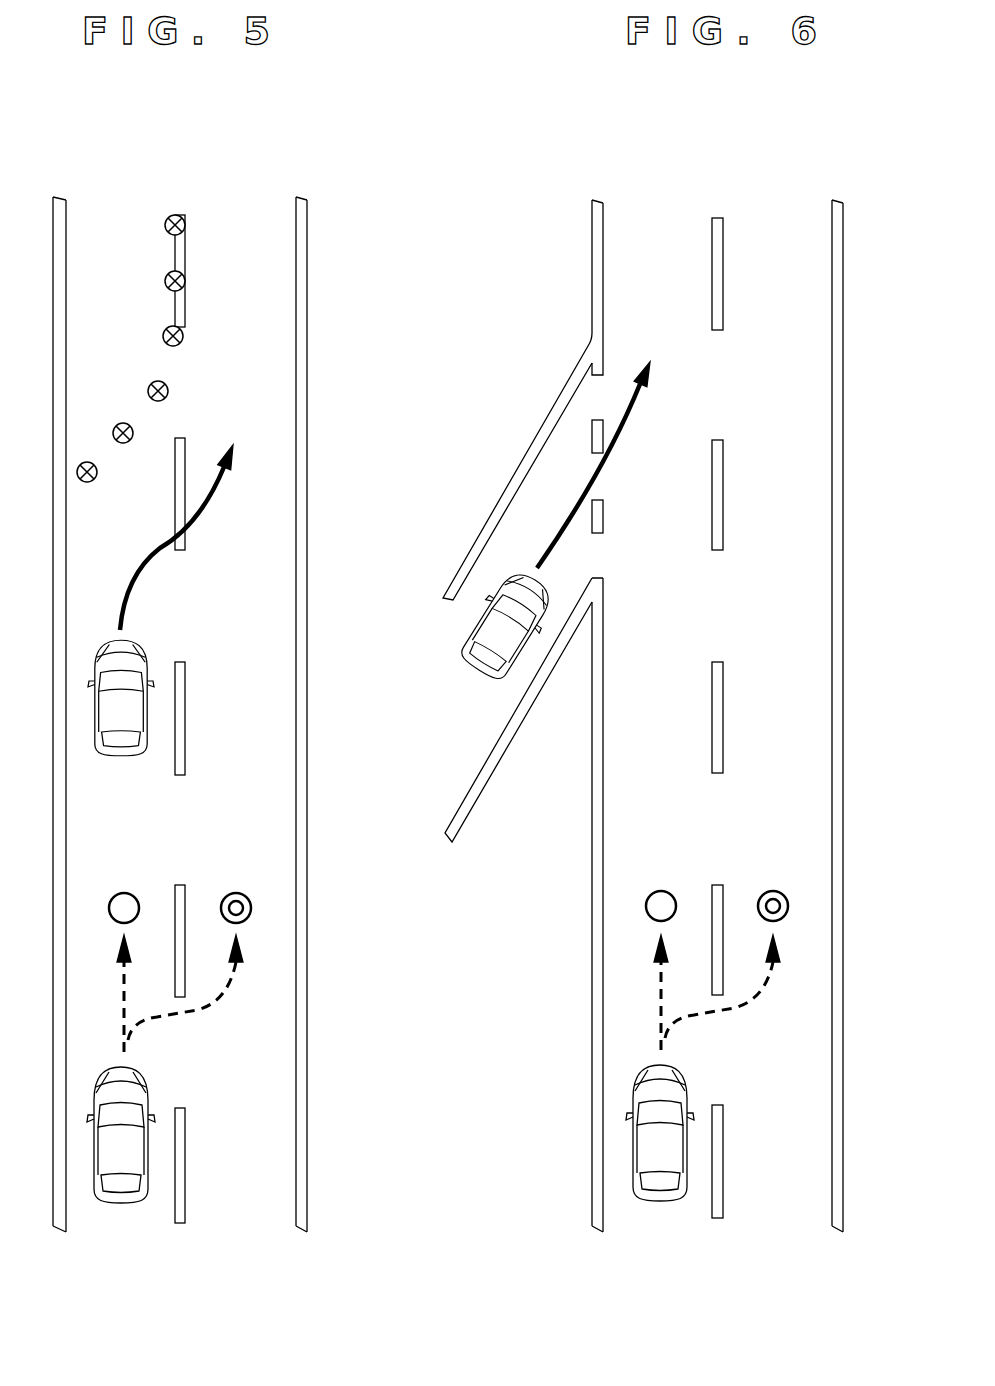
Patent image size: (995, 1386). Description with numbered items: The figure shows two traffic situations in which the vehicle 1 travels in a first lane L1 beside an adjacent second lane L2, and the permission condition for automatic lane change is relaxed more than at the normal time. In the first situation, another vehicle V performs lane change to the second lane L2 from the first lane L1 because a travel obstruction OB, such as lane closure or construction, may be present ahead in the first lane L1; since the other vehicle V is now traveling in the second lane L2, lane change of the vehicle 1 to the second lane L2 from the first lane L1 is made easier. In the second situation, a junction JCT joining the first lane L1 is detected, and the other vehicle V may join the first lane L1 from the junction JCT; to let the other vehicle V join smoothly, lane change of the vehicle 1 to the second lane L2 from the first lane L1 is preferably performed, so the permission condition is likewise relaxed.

In FIG. 5, the first lane L1 is at (175, 185).
In FIG. 6, the first lane L1 is at (713, 185).
In FIG. 5, the second lane L2 is at (297, 185).
In FIG. 6, the second lane L2 is at (832, 185).
In FIG. 5, the obstruction OB is at (162, 315).
In FIG. 5, the other vehicle V is at (145, 718).
In FIG. 6, the other vehicle V is at (517, 657).
In FIG. 6, the junction JCT is at (573, 408).
In FIG. 5, the vehicle 1 is at (145, 1160).
In FIG. 6, the vehicle 1 is at (683, 1157).